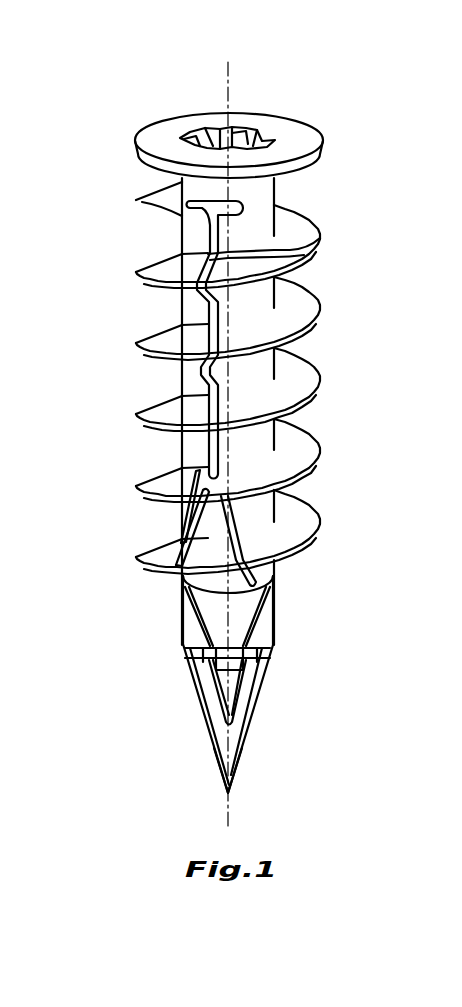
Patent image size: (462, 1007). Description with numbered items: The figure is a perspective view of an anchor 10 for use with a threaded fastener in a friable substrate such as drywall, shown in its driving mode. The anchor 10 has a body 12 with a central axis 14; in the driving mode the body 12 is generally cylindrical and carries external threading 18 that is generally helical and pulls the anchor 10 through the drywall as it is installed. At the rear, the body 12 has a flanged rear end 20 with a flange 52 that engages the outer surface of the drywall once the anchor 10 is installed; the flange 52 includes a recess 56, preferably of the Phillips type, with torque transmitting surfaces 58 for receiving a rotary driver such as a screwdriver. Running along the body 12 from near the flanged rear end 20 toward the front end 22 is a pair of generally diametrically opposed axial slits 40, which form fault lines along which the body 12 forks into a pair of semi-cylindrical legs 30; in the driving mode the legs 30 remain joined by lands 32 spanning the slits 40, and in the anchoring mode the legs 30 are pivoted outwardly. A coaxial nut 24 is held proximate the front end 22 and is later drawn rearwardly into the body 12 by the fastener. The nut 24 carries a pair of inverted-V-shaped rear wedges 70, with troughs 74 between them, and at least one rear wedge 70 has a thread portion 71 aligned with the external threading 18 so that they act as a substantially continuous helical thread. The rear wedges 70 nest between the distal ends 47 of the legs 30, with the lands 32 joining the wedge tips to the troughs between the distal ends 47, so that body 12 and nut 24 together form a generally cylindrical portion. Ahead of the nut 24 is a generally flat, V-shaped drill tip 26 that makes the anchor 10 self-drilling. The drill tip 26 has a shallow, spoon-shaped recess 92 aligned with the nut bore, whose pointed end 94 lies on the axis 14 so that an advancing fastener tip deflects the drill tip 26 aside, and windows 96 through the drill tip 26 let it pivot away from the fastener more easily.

The anchor 10 is at (381, 211).
The body 12 is at (304, 342).
The axis 14 is at (233, 76).
The external threading 18 is at (301, 247).
The flanged rear end 20 is at (118, 154).
The front end 22 is at (291, 569).
The nut 24 is at (200, 615).
The drill tip 26 is at (235, 750).
The legs 30 is at (188, 383).
The lands 32 is at (212, 485).
The slits 40 is at (212, 373).
The distal ends 47 is at (262, 553).
The flange 52 is at (288, 130).
The recess 56 is at (243, 126).
The torque transmitting surfaces 58 is at (186, 135).
The rear wedges 70 is at (220, 523).
The thread portion 71 is at (200, 558).
The troughs 74 is at (277, 577).
The recess 92 is at (227, 689).
The pointed end 94 is at (223, 737).
The windows 96 is at (257, 662).